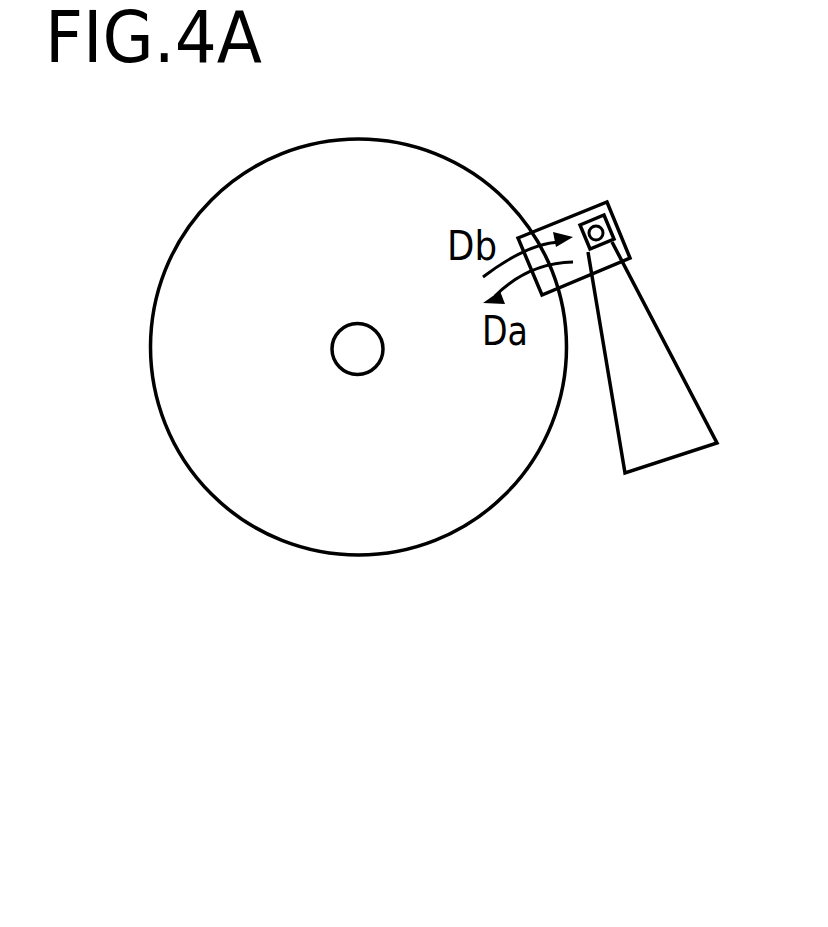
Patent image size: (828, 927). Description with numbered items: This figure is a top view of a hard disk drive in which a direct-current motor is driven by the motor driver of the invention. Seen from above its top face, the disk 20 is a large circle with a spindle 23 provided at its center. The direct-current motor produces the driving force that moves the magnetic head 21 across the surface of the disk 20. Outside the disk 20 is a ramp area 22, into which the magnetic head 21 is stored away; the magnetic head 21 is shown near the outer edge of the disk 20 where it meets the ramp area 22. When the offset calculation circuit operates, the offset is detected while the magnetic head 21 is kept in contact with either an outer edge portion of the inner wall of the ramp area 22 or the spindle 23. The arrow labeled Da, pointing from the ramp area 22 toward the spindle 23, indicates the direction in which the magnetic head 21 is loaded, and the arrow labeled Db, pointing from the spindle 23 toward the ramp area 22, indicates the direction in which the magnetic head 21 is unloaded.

The disk 20 is at (358, 555).
The magnetic head 21 is at (598, 220).
The ramp area 22 is at (622, 227).
The spindle 23 is at (357, 375).